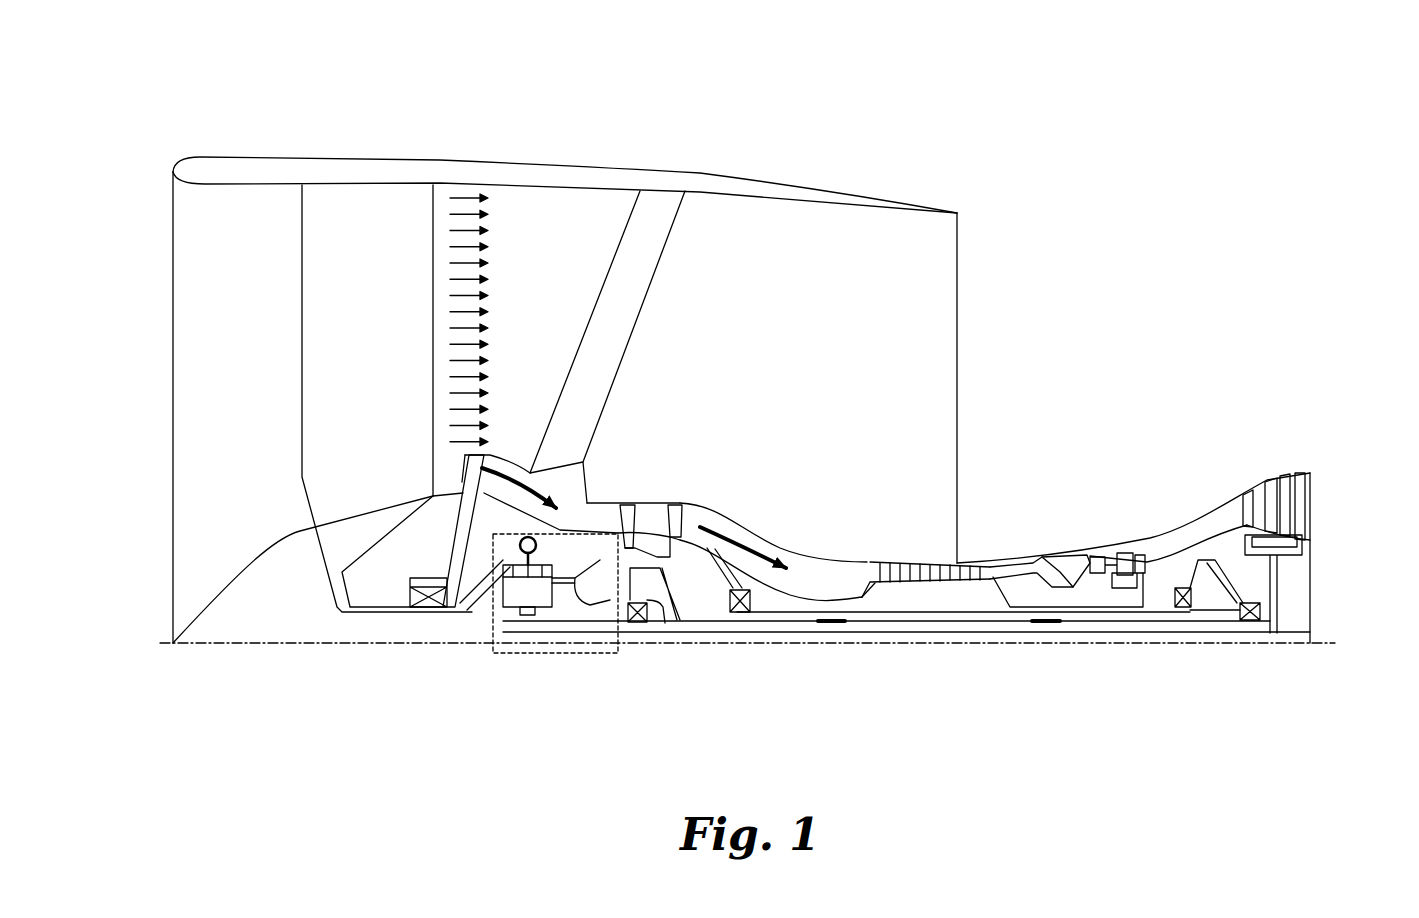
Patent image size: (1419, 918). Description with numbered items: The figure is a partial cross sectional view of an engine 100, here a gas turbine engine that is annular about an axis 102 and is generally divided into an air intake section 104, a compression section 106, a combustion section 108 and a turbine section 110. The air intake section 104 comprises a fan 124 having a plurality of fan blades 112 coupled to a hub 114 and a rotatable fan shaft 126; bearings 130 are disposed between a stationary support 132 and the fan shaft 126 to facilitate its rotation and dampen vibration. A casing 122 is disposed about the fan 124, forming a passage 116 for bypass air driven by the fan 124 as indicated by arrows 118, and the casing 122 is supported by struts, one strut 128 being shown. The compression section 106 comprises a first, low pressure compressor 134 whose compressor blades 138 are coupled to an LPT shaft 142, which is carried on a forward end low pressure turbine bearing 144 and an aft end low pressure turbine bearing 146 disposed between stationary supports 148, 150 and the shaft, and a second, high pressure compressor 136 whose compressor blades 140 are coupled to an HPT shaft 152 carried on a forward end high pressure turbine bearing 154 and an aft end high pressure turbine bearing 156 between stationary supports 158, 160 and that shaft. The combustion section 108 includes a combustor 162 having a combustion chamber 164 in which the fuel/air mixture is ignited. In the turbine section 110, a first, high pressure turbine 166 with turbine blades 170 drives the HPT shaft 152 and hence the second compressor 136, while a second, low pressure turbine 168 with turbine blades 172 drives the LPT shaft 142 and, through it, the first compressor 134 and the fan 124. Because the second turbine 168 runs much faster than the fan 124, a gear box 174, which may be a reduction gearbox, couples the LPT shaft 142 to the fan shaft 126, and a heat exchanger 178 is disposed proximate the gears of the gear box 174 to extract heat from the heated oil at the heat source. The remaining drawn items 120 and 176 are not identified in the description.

The engine 100 is at (285, 136).
The axis 102 is at (1332, 650).
The air intake section 104 is at (500, 712).
The compression section 106 is at (1017, 712).
The combustion section 108 is at (1017, 712).
The turbine section 110 is at (1308, 712).
The fan blades 112 is at (318, 353).
The hub 114 is at (217, 598).
The passage 116 is at (530, 264).
The arrows 118 is at (470, 195).
The fan 120 is at (532, 476).
The casing 122 is at (718, 175).
The fan 124 is at (285, 278).
The fan shaft 126 is at (467, 614).
The strut 128 is at (637, 213).
The bearings 130 is at (410, 598).
The stationary support 132 is at (450, 553).
The first compressor 134 is at (625, 482).
The second compressor 136 is at (867, 551).
The compressor blades 138 is at (690, 514).
The compressor blades 140 is at (860, 576).
The LPT shaft 142 is at (778, 636).
The forward end low pressure turbine bearing 144 is at (636, 624).
The aft end low pressure turbine bearing 146 is at (1250, 622).
The stationary support 148 is at (667, 626).
The stationary support 150 is at (1220, 602).
The HPT shaft 152 is at (915, 609).
The forward end high pressure turbine bearing 154 is at (738, 614).
The aft end high pressure turbine bearing 156 is at (1185, 610).
The stationary support 158 is at (723, 580).
The stationary support 160 is at (1197, 575).
The combustor 162 is at (1068, 565).
The combustion chamber 164 is at (1075, 555).
The first turbine 166 is at (1150, 544).
The second turbine 168 is at (1240, 462).
The turbine blades 170 is at (1152, 556).
The turbine blades 172 is at (1320, 505).
The gear box 174 is at (507, 656).
The shaft coupling 176 is at (830, 626).
The heat exchanger 178 is at (514, 545).